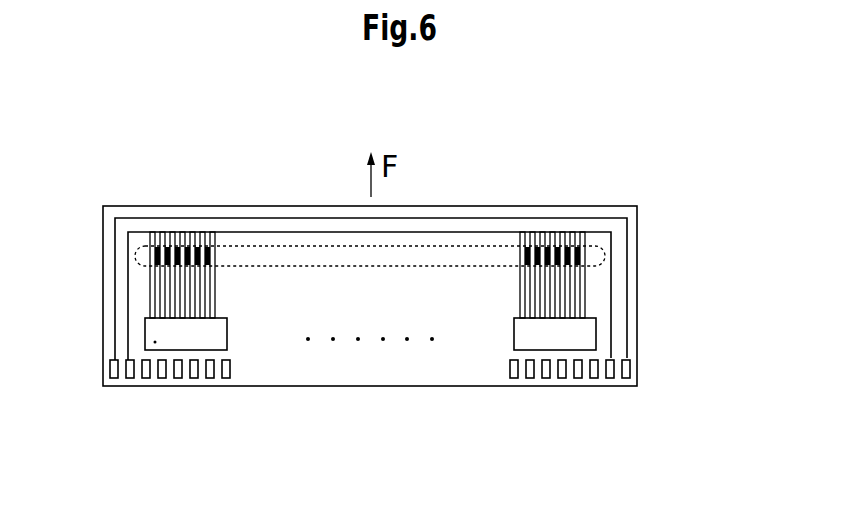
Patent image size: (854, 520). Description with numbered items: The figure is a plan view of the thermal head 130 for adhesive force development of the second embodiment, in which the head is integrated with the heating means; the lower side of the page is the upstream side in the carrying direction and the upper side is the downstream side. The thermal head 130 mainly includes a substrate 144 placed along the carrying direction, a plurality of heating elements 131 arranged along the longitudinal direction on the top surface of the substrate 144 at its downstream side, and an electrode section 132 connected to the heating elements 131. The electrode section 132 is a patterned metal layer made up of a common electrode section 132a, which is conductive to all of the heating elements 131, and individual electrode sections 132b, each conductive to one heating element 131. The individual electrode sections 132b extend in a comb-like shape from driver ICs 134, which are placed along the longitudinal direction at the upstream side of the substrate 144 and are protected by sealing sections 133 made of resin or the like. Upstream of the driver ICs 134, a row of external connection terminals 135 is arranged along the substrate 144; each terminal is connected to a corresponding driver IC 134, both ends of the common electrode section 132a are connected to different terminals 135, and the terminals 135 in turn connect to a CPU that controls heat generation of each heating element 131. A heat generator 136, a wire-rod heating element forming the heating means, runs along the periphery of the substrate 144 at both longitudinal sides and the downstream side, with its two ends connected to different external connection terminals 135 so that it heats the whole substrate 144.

The thermal head for adhesive force development 130 is at (629, 172).
The heating elements 131 is at (585, 255).
The electrode section 132 is at (336, 197).
The common electrode section 132a is at (148, 231).
The individual electrode sections 132b is at (367, 222).
The sealing sections 133 is at (145, 329).
The driver ICs 134 is at (155, 342).
The external connection terminals 135 is at (193, 368).
The heat generator 136 is at (627, 260).
The substrate 144 is at (637, 222).